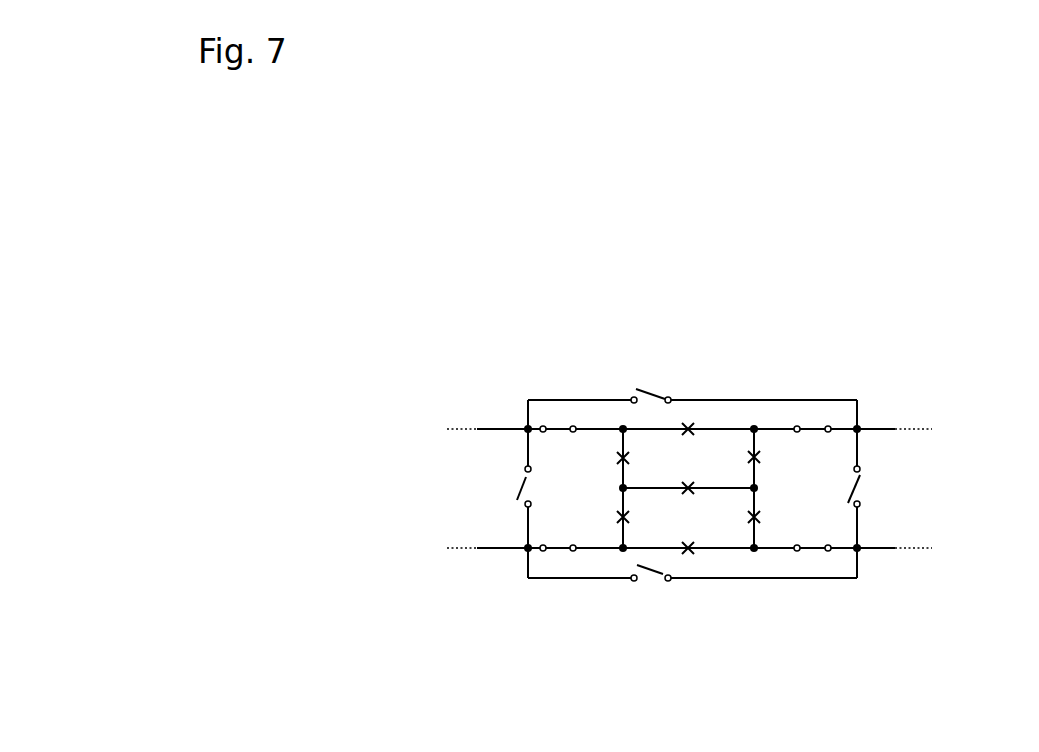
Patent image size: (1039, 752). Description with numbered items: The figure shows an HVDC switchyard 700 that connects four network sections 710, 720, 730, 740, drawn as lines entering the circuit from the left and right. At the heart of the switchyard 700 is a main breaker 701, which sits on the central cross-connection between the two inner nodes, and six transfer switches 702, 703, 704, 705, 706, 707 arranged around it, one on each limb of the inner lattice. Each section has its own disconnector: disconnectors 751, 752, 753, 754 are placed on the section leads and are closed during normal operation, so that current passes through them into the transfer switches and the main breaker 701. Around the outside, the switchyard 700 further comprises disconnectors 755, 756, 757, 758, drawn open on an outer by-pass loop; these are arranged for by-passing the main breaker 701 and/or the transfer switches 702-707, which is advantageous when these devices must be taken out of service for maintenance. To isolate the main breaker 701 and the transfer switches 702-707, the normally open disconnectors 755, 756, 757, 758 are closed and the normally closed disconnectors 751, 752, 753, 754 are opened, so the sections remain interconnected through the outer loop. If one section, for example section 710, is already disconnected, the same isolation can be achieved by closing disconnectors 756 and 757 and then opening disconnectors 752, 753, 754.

The switchyard 700 is at (686, 510).
The main breaker 701 is at (690, 480).
The transfer switch 702 is at (590, 517).
The transfer switch 703 is at (590, 457).
The transfer switch 704 is at (785, 457).
The transfer switch 705 is at (785, 517).
The transfer switch 706 is at (695, 423).
The transfer switch 707 is at (697, 560).
The section 710 is at (452, 548).
The section 720 is at (452, 428).
The section 730 is at (927, 428).
The section 740 is at (927, 548).
The disconnector 751 is at (563, 558).
The disconnector 752 is at (563, 422).
The disconnector 753 is at (825, 425).
The disconnector 754 is at (813, 555).
The disconnector 755 is at (494, 486).
The disconnector 756 is at (649, 380).
The disconnector 757 is at (883, 486).
The disconnector 758 is at (654, 595).